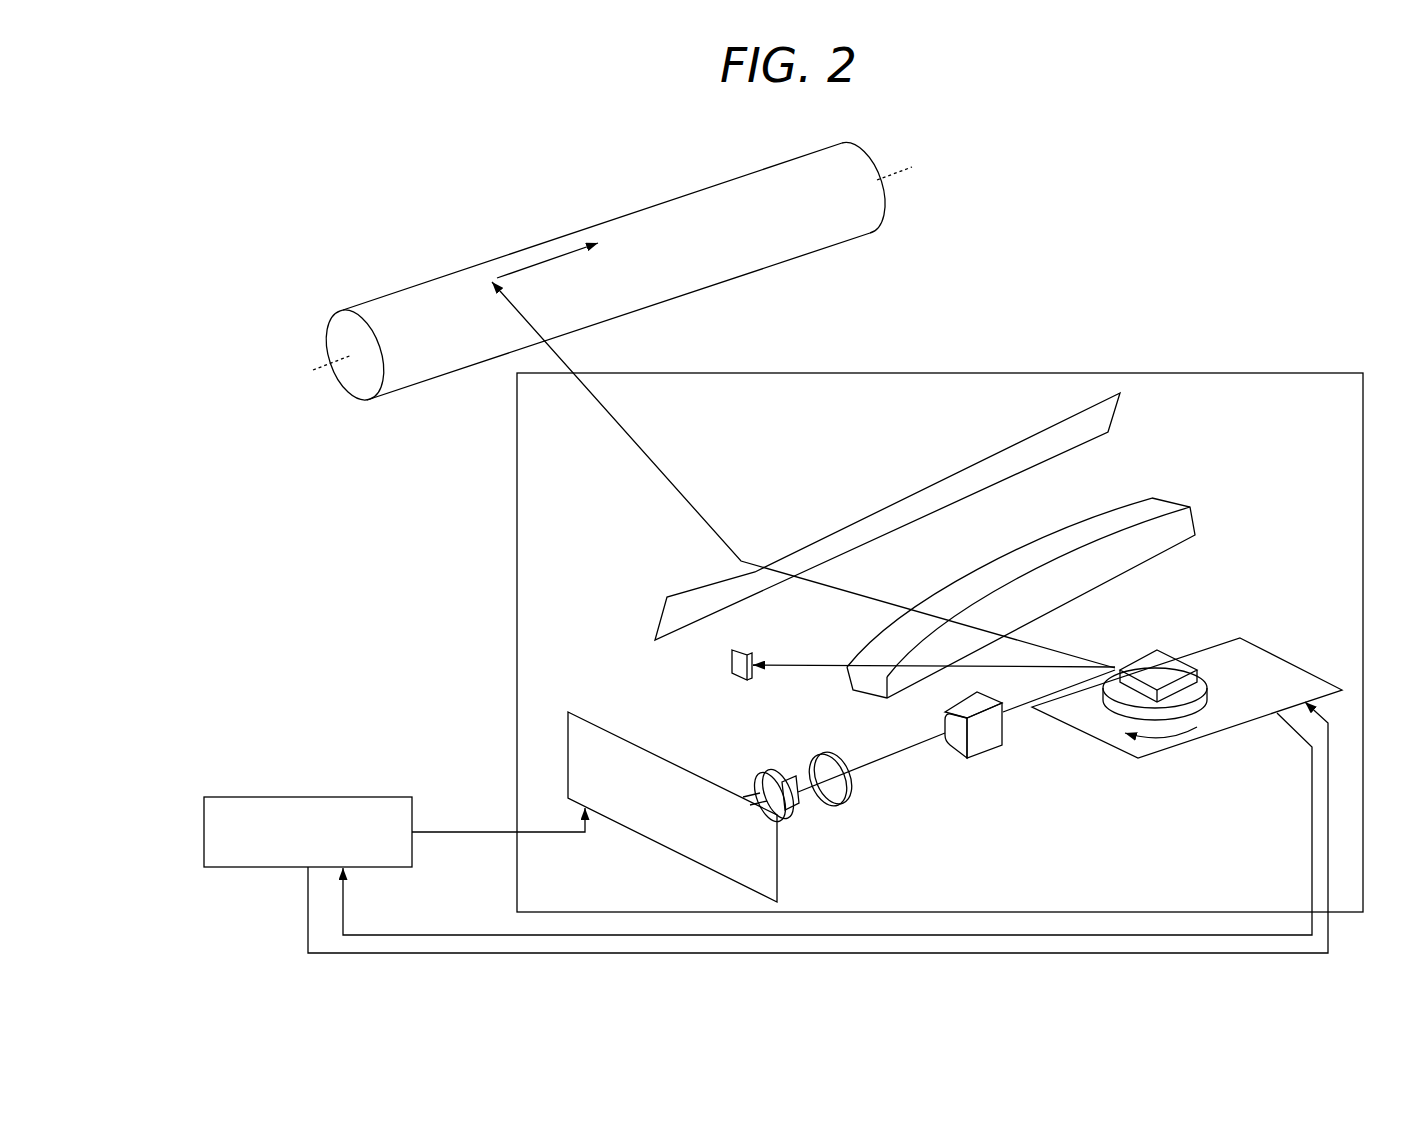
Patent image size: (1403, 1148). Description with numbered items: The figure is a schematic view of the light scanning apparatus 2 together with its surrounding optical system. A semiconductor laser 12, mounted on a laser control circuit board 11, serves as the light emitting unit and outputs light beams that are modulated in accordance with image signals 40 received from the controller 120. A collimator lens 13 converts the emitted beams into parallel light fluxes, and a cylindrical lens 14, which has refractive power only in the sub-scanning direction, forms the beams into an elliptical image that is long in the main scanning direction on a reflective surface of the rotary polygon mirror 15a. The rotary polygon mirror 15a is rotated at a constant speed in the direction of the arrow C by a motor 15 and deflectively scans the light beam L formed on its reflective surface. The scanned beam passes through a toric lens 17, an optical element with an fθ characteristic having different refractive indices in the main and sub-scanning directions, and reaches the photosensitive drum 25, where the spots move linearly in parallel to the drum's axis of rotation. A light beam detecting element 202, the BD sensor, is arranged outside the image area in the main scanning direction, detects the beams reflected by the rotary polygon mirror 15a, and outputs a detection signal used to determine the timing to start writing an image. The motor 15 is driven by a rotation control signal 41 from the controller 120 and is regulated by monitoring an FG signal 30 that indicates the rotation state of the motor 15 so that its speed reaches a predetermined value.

The light scanning apparatus 2 is at (1188, 373).
The photosensitive drum 25 is at (827, 235).
The toric lens 17 is at (1157, 497).
The light beam L is at (1060, 652).
The light beam detecting element 202 is at (747, 648).
The motor 15 is at (1275, 652).
The rotary polygon mirror 15a is at (1158, 668).
The arrow C is at (1160, 737).
The laser control circuit board 11 is at (568, 722).
The semiconductor laser 12 is at (753, 773).
The collimator lens 13 is at (813, 753).
The cylindrical lens 14 is at (990, 752).
The controller 120 is at (343, 797).
The image signals 40 is at (435, 832).
The FG signal 30 is at (430, 935).
The rotation control signal 41 is at (307, 907).